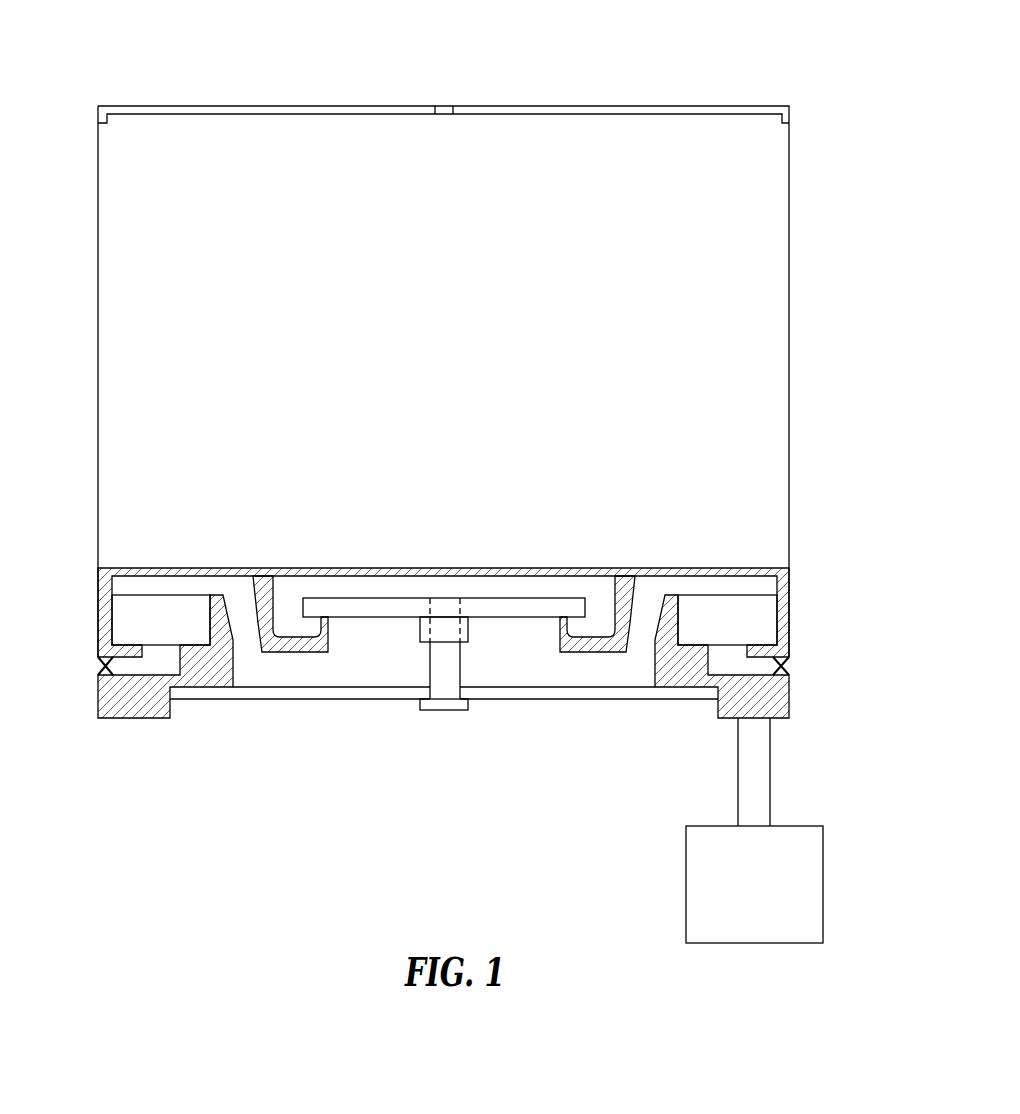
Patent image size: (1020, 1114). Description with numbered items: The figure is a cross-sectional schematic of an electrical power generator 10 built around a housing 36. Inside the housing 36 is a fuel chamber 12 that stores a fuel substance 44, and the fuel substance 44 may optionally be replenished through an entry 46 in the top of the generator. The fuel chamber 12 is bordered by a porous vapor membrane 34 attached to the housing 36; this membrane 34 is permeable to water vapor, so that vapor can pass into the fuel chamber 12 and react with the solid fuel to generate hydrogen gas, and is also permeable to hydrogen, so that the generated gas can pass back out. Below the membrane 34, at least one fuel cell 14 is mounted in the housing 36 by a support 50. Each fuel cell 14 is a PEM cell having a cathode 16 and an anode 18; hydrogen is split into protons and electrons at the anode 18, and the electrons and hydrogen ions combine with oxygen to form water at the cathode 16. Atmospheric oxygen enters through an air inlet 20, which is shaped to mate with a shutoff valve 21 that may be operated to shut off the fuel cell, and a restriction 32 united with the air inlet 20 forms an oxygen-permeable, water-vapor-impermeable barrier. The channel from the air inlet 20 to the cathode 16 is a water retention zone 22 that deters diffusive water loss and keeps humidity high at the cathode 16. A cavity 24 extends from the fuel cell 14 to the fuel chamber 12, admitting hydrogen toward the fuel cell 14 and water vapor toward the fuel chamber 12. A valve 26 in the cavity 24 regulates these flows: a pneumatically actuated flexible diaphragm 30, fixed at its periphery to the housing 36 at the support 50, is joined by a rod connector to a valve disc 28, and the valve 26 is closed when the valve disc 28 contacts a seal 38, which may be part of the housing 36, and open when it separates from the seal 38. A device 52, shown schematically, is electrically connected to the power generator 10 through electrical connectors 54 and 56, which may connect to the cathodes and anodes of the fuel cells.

The electrical power generator 10 is at (730, 47).
The fuel chamber 12 is at (773, 175).
The fuel cell 14 is at (122, 612).
The cathode 16 is at (718, 660).
The anode 18 is at (742, 583).
The air inlet 20 is at (792, 657).
The shutoff valve 21 is at (102, 667).
The water retention zone 22 is at (172, 660).
The cavity 24 is at (502, 583).
The valve 26 is at (418, 632).
The valve disc 28 is at (377, 605).
The flexible diaphragm 30 is at (300, 700).
The restriction 32 is at (94, 657).
The porous vapor membrane 34 is at (147, 568).
The housing 36 is at (98, 379).
The seal 38 is at (590, 643).
The fuel substance 44 is at (752, 237).
The entry 46 is at (443, 112).
The support 50 is at (138, 718).
The device 52 is at (823, 884).
The electrical connector 54 is at (738, 772).
The electrical connector 56 is at (770, 786).